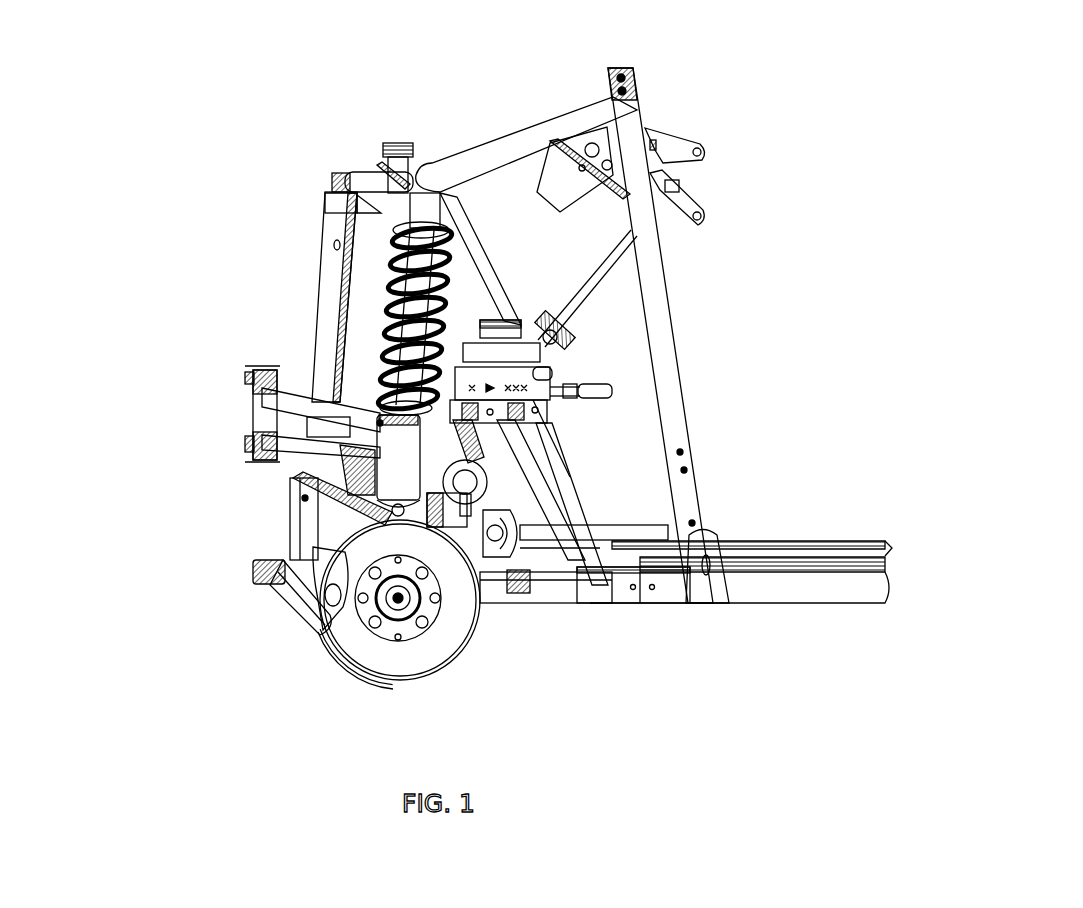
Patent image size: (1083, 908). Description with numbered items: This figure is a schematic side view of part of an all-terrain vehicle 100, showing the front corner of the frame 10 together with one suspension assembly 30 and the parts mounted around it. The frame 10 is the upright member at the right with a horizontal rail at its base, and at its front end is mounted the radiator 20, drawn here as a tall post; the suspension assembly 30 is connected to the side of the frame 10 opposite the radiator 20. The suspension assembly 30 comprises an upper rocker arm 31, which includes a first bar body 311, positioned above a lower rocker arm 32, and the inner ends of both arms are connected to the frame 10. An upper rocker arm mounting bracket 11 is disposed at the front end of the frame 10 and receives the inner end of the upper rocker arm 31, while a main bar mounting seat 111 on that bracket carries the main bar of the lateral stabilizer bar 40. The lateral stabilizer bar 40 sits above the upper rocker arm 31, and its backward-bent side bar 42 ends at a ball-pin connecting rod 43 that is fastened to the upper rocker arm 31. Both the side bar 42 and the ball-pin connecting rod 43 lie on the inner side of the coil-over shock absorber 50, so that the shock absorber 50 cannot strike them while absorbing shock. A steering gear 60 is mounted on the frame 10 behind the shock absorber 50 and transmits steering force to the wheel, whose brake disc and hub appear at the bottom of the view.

The all-terrain vehicle 100 is at (520, 36).
The frame 10 is at (677, 410).
The upper rocker arm mounting bracket 11 is at (253, 432).
The main bar mounting seat 111 is at (257, 405).
The radiator 20 is at (333, 287).
The suspension assembly 30 is at (257, 572).
The upper rocker arm 31 is at (247, 519).
The first bar body 311 is at (325, 493).
The lower rocker arm 32 is at (285, 592).
The lateral stabilizer bar 40 is at (246, 372).
The side bar 42 is at (260, 370).
The ball-pin connecting rod 43 is at (420, 440).
The shock absorber 50 is at (440, 345).
The steering gear 60 is at (470, 483).